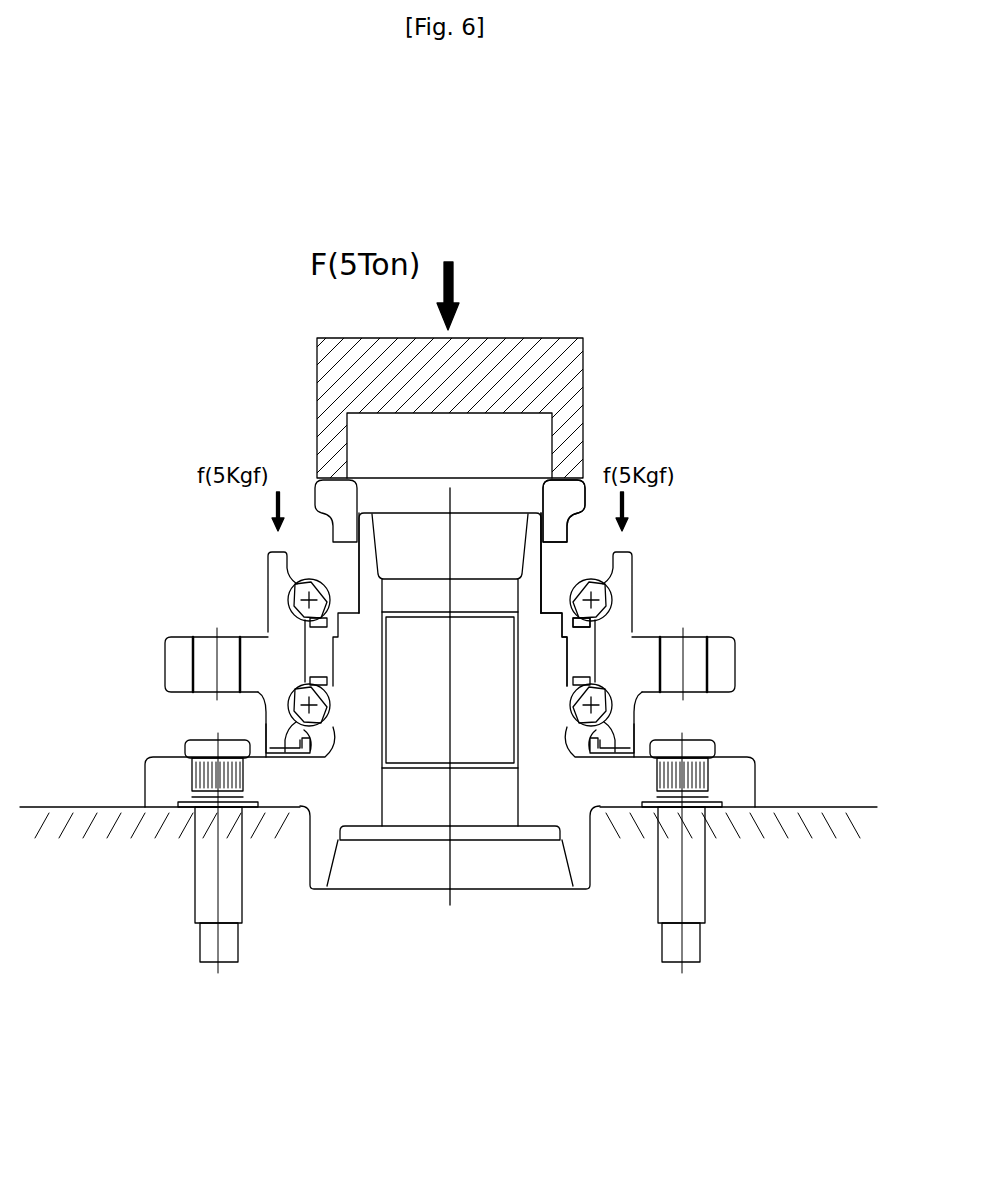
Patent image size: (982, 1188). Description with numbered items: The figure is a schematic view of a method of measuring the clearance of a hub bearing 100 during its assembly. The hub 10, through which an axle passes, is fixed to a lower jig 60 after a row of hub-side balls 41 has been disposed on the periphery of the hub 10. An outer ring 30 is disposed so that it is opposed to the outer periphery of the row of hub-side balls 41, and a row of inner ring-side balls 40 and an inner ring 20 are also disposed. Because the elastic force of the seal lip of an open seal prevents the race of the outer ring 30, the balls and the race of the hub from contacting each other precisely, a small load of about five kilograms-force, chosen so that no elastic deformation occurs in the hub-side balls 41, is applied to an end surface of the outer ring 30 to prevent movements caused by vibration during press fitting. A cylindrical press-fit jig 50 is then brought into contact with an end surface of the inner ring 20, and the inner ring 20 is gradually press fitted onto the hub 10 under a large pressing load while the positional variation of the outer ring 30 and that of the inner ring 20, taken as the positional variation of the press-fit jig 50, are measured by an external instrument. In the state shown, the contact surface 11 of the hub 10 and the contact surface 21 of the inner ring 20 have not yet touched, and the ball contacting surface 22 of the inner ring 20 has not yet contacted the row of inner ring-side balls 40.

The hub bearing 100 is at (130, 155).
The hub 10 is at (466, 775).
The contact surface of the hub 11 is at (555, 613).
The inner ring 20 is at (323, 495).
The contact surface of the inner ring 21 is at (545, 543).
The ball contacting surface of the inner ring 22 is at (572, 538).
The outer ring 30 is at (180, 660).
The row of inner ring-side balls 40 is at (268, 553).
The row of hub-side balls 41 is at (608, 684).
The cylindrical press-fit jig 50 is at (505, 363).
The lower jig 60 is at (762, 833).